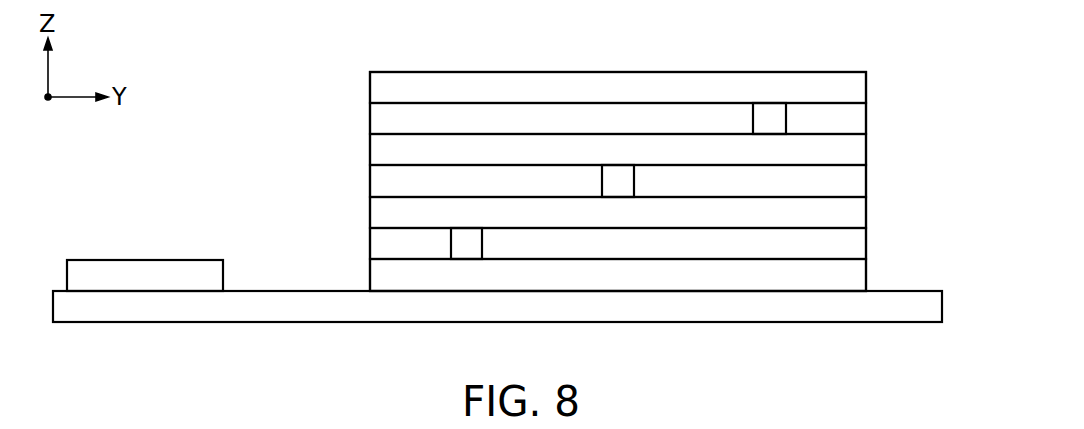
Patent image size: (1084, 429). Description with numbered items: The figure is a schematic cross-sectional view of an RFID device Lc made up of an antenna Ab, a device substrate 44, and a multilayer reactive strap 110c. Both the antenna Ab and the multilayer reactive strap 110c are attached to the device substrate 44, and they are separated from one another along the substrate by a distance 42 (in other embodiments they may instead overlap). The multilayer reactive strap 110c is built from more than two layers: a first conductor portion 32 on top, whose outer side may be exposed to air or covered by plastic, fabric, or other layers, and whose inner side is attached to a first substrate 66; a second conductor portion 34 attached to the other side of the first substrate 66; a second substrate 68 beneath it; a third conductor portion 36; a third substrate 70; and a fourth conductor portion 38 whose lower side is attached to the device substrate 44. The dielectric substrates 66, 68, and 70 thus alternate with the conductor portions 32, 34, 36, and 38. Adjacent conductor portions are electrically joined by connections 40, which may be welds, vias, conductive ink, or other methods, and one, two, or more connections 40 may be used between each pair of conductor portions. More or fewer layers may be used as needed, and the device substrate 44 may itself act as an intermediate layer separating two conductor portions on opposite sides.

The first conductor portion 32 is at (657, 80).
The second conductor portion 34 is at (860, 150).
The third conductor portion 36 is at (860, 215).
The fourth conductor portion 38 is at (860, 280).
The connections 40 is at (771, 106).
The distance 42 is at (358, 262).
The device substrate 44 is at (918, 316).
The first substrate 66 is at (374, 118).
The second substrate 68 is at (374, 184).
The third substrate 70 is at (374, 240).
The multilayer reactive strap 110c is at (921, 74).
The antenna element Ab is at (137, 270).
The device Lc is at (176, 94).